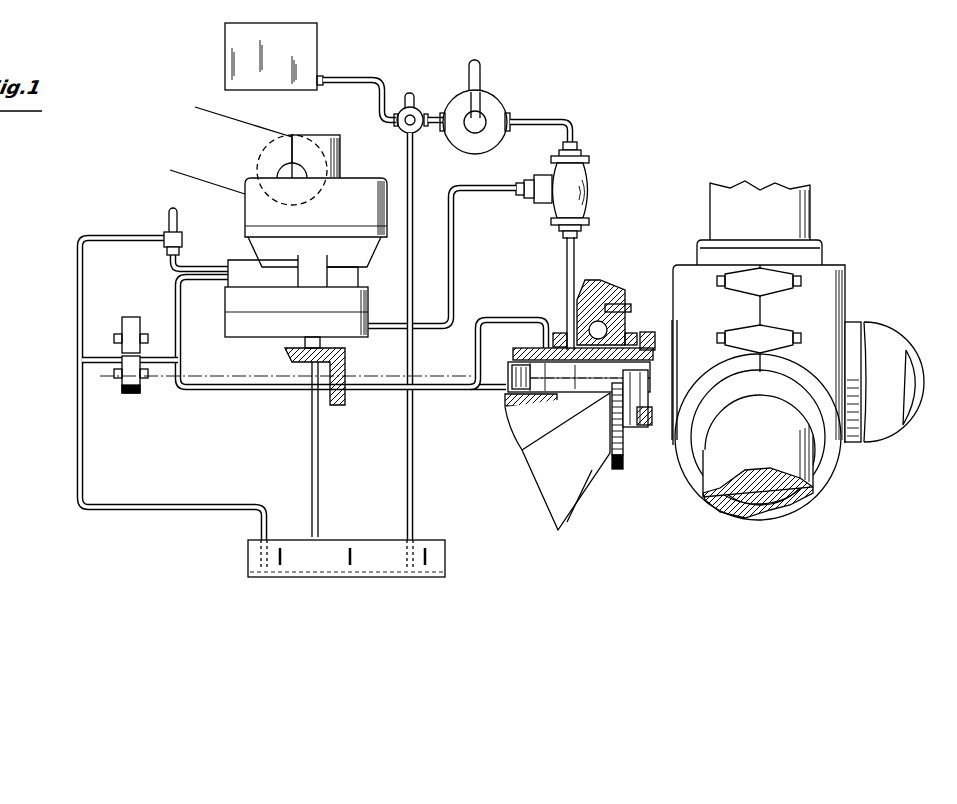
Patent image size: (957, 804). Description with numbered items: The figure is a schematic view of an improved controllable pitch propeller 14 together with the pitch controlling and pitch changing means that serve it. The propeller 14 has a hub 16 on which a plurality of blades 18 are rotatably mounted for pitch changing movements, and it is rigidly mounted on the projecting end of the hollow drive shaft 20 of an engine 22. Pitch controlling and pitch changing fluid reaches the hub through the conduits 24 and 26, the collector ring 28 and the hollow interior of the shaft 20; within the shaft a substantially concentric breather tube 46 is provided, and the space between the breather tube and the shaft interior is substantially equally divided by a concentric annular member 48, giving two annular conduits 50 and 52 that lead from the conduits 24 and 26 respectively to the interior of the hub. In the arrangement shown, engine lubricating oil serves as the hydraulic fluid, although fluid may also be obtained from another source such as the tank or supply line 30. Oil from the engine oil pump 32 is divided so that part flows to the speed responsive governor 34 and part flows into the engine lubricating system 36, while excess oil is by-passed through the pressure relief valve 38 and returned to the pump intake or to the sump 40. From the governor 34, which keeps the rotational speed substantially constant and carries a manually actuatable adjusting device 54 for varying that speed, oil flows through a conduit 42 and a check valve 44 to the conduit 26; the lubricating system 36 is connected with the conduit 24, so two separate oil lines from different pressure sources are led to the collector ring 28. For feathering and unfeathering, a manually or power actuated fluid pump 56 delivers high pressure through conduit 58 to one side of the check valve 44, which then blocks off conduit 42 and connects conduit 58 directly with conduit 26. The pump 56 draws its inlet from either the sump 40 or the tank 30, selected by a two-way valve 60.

The controllable pitch propeller 14 is at (845, 282).
The hub 16 is at (676, 285).
The blades 18 is at (812, 212).
The hollow drive shaft 20 is at (637, 433).
The engine 22 is at (587, 492).
The conduit 24 is at (500, 316).
The conduit 26 is at (566, 252).
The collector ring 28 is at (552, 332).
The tank or supply line 30 is at (320, 44).
The engine oil pump 32 is at (136, 318).
The speed responsive governor 34 is at (240, 216).
The engine lubricating system 36 is at (240, 390).
The pressure relief valve 38 is at (166, 250).
The sump 40 is at (248, 553).
The conduit 42 is at (455, 248).
The check valve 44 is at (592, 180).
The breather tube 46 is at (514, 385).
The concentric annular member 48 is at (512, 366).
The annular conduit 50 is at (517, 371).
The annular conduit 52 is at (656, 340).
The manually actuatable adjusting device 54 is at (262, 158).
The fluid pump 56 is at (500, 102).
The conduit 58 is at (566, 120).
The two-way valve 60 is at (416, 108).